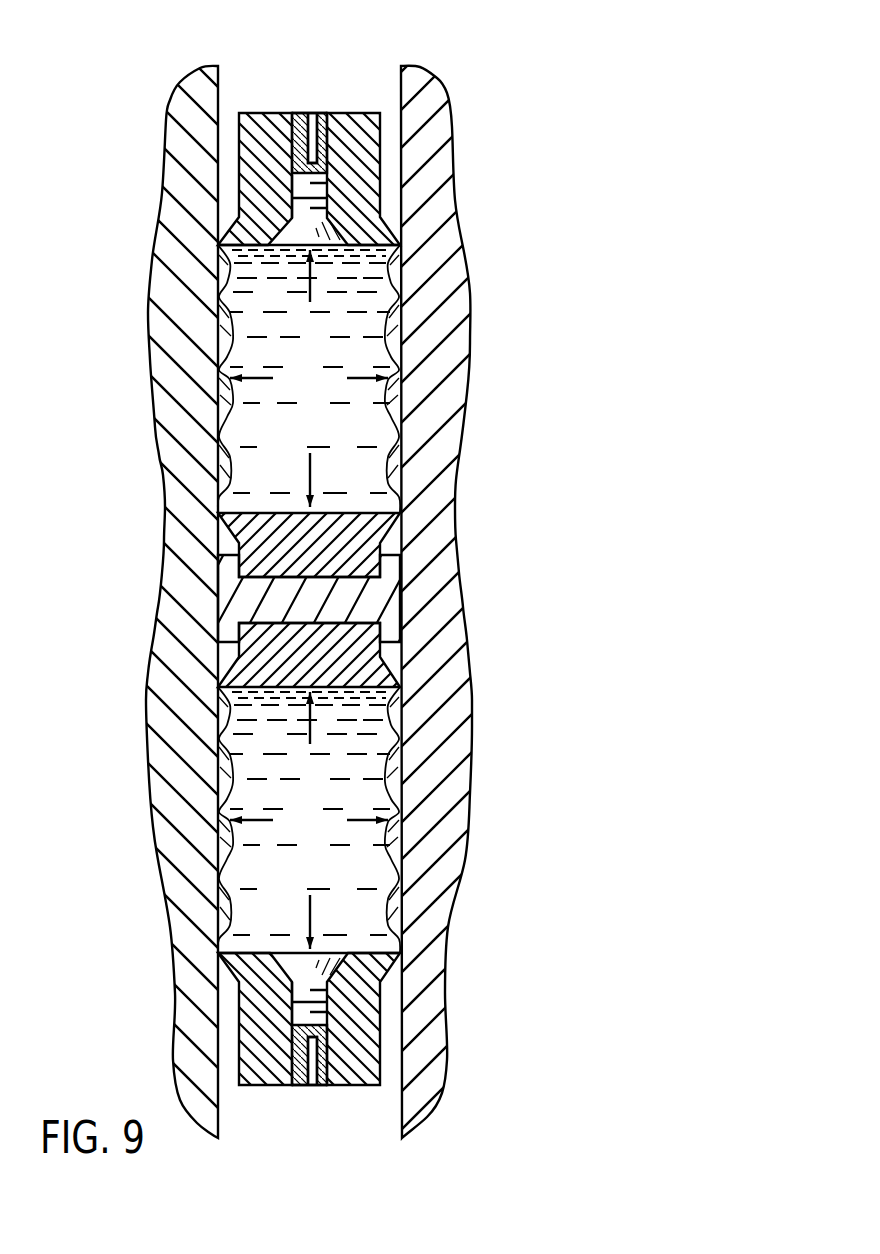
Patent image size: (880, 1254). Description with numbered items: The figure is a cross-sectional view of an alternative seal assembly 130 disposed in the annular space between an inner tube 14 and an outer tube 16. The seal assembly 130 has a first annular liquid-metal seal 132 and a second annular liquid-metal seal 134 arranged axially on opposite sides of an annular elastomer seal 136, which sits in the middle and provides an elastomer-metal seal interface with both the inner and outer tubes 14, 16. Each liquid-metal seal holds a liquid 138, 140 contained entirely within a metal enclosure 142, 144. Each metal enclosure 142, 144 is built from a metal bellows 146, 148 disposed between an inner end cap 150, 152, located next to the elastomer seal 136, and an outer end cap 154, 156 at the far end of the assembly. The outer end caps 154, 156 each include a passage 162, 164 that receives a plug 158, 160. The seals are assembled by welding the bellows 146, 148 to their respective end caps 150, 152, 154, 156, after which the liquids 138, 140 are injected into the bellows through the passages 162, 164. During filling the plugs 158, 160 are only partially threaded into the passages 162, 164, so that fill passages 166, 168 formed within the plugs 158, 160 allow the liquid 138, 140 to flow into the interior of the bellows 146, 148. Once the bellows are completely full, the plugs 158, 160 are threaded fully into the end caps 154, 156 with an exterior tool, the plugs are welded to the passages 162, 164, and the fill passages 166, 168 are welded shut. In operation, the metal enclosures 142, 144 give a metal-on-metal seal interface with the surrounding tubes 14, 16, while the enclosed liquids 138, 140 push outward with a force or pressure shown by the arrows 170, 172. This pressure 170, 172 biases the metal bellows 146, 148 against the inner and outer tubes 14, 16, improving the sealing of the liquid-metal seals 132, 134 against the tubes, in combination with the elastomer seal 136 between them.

The inner tube 14 is at (170, 110).
The outer tube 16 is at (447, 92).
The seal assembly 130 is at (232, 43).
The first annular liquid-metal seal 132 is at (200, 395).
The second annular liquid-metal seal 134 is at (202, 835).
The annular elastomer seal 136 is at (403, 607).
The liquid 138 is at (380, 378).
The liquid 140 is at (376, 820).
The metal enclosure 142 is at (371, 200).
The metal enclosure 144 is at (365, 1010).
The metal bellows 146 is at (393, 412).
The metal bellows 148 is at (397, 720).
The inner end cap 150 is at (392, 543).
The inner end cap 152 is at (385, 667).
The outer end cap 154 is at (363, 113).
The outer end cap 156 is at (368, 1087).
The plug 158 is at (308, 113).
The plug 160 is at (310, 1050).
The passage 162 is at (275, 133).
The passage 164 is at (287, 1058).
The fill passage 166 is at (319, 113).
The fill passage 168 is at (323, 1057).
The arrows 170 is at (307, 477).
The arrows 172 is at (309, 820).